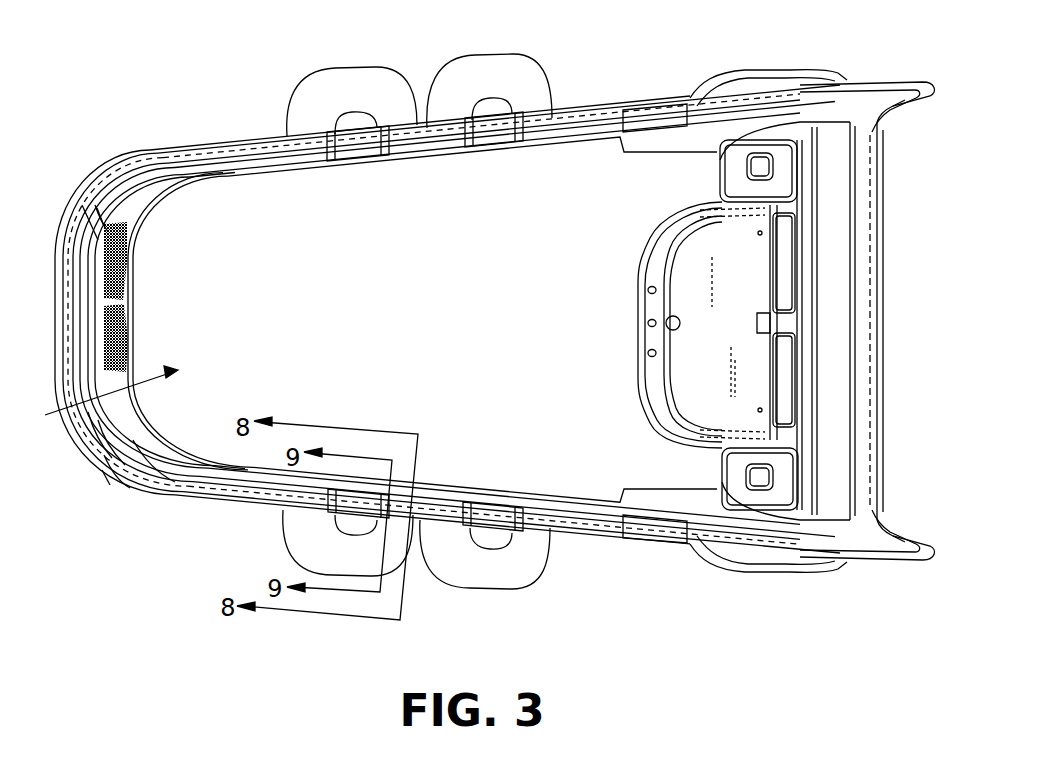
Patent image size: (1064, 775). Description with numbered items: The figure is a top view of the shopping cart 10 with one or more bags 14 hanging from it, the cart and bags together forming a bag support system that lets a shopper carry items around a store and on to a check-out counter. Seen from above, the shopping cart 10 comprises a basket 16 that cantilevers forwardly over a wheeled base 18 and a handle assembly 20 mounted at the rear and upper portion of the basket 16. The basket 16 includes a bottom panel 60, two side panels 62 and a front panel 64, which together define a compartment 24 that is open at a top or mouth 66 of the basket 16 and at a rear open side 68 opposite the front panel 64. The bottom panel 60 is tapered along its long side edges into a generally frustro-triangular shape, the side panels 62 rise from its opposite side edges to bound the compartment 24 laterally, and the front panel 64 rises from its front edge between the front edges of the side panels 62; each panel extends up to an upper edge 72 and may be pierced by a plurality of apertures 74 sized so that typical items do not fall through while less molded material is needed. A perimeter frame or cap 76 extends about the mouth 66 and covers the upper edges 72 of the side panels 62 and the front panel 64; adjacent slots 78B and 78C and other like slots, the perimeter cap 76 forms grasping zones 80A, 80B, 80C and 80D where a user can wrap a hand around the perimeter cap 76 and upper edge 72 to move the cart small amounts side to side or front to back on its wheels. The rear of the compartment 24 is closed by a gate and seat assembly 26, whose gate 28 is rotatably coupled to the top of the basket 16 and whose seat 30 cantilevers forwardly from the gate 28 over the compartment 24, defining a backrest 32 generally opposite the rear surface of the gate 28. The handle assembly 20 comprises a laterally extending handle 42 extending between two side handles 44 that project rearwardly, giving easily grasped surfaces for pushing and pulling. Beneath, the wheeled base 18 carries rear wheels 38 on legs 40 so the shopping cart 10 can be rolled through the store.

The shopping cart 10 is at (170, 70).
The bags 14 is at (344, 88).
The basket 16 is at (145, 460).
The wheeled base 18 is at (88, 182).
The handle assembly 20 is at (862, 190).
The compartment 24 is at (98, 399).
The gate and seat assembly 26 is at (808, 357).
The gate 28 is at (808, 300).
The seat 30 is at (758, 385).
The backrest 32 is at (668, 276).
The rear wheels 38 is at (845, 82).
The legs 40 is at (748, 72).
The laterally extending handle 42 is at (862, 437).
The side handles 44 is at (900, 106).
The bottom panel 60 is at (230, 205).
The side panels 62 is at (594, 128).
The front panel 64 is at (105, 322).
The mouth 66 is at (173, 162).
The rear open side 68 is at (840, 112).
The upper edge 72 is at (200, 490).
The apertures 74 is at (105, 262).
The perimeter cap 76 is at (115, 472).
The slot 78B is at (100, 443).
The slot 78C is at (100, 218).
The grasping zone 80A is at (440, 515).
The grasping zone 80B is at (98, 480).
The grasping zone 80C is at (97, 212).
The top clip 80D is at (425, 135).